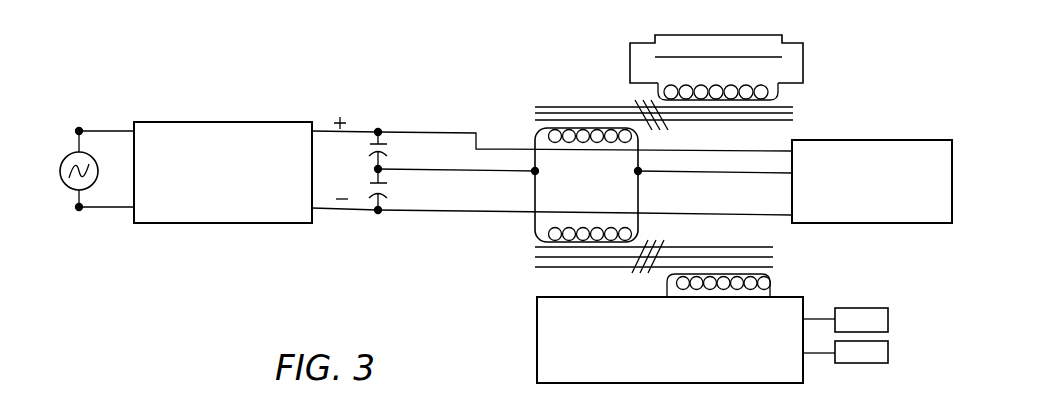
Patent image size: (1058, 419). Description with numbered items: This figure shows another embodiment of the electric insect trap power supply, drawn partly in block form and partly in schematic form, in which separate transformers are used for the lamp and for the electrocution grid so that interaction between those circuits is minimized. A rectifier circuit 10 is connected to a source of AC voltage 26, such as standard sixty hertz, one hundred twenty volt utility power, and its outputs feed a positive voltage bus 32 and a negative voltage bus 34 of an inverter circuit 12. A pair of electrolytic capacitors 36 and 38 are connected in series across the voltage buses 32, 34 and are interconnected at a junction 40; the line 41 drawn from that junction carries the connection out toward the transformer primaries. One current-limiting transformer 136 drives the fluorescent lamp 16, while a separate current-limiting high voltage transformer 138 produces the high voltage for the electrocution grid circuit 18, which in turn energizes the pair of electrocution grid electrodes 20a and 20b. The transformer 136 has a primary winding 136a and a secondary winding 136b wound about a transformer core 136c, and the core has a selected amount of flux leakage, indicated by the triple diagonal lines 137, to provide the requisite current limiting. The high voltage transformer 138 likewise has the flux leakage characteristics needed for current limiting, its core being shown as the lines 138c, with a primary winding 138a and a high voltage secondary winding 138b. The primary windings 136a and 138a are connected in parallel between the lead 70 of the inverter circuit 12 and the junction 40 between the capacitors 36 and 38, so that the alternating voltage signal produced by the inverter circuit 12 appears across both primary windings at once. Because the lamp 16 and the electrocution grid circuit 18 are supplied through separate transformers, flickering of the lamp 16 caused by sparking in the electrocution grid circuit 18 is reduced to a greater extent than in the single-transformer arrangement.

The rectifier circuit 10 is at (230, 106).
The inverter circuit 12 is at (903, 140).
The fluorescent lamp 16 is at (738, 35).
The electrocution grid circuit 18 is at (537, 343).
The electrocution grid electrode 20a is at (877, 308).
The electrocution grid electrode 20b is at (875, 363).
The source of AC voltage 26 is at (62, 178).
The positive voltage bus 32 is at (445, 128).
The negative voltage bus 34 is at (480, 215).
The electrolytic capacitor 36 is at (369, 153).
The electrolytic capacitor 38 is at (388, 193).
The junction 40 is at (387, 168).
The center tap line 41 is at (456, 184).
The lead 70 is at (745, 175).
The current-limiting transformer 136 is at (537, 107).
The primary winding 136a is at (642, 137).
The secondary winding 136b is at (780, 96).
The transformer core 136c is at (780, 128).
The triple diagonal lines 137 is at (633, 98).
The high voltage transformer 138 is at (550, 270).
The primary winding 138a is at (642, 225).
The high voltage secondary winding 138b is at (773, 284).
The transformer core 138c is at (773, 252).